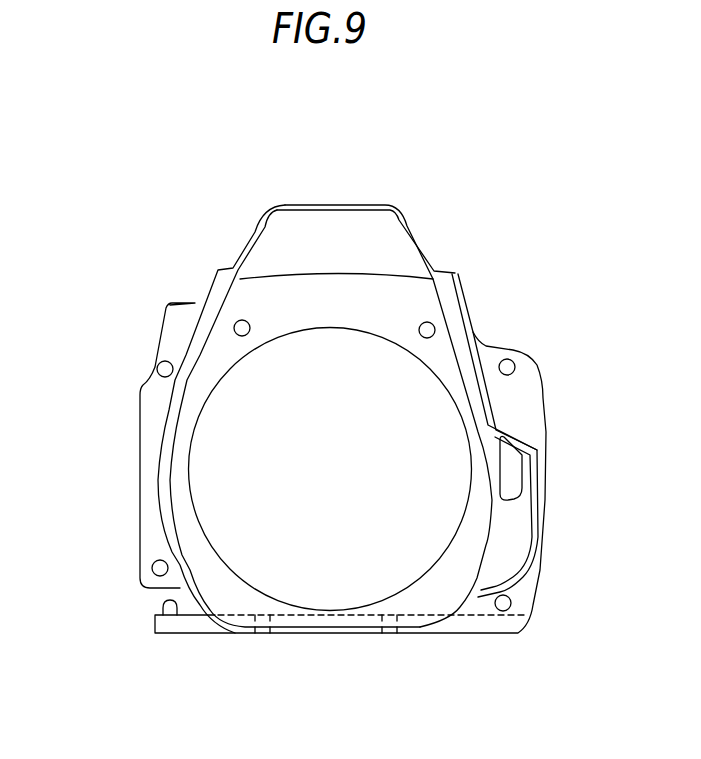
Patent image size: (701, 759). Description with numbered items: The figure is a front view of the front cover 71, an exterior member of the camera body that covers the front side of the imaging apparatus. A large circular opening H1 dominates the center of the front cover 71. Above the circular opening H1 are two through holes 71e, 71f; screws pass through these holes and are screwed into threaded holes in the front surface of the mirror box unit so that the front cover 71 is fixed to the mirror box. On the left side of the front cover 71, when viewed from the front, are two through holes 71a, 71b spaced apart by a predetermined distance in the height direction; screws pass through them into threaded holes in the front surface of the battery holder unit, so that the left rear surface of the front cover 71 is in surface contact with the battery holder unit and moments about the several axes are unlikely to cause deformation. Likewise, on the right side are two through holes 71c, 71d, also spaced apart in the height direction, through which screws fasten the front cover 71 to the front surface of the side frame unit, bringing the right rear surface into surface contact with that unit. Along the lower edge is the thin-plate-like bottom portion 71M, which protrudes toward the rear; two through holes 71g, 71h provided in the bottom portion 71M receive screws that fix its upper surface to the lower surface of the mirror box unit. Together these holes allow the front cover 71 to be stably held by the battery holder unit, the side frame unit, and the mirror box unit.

The front cover 71 is at (338, 168).
The through hole 71a is at (157, 370).
The through hole 71b is at (152, 568).
The through hole 71c is at (515, 365).
The through hole 71d is at (511, 603).
The through hole 71e is at (236, 321).
The through hole 71f is at (433, 323).
The through hole 71g is at (263, 637).
The through hole 71h is at (388, 637).
The bottom portion 71M is at (162, 615).
The circular opening H1 is at (250, 480).